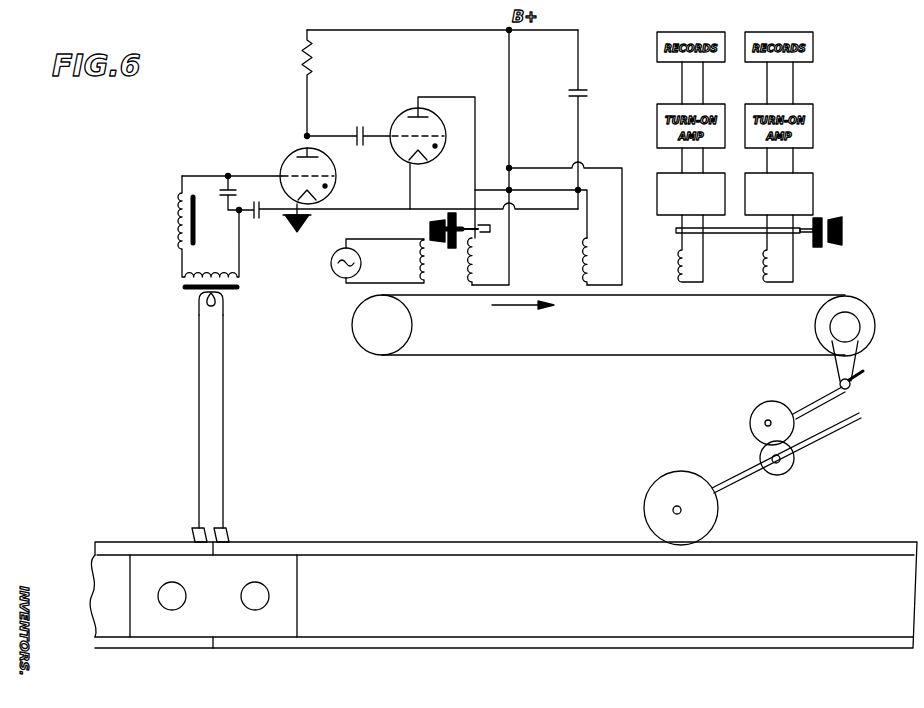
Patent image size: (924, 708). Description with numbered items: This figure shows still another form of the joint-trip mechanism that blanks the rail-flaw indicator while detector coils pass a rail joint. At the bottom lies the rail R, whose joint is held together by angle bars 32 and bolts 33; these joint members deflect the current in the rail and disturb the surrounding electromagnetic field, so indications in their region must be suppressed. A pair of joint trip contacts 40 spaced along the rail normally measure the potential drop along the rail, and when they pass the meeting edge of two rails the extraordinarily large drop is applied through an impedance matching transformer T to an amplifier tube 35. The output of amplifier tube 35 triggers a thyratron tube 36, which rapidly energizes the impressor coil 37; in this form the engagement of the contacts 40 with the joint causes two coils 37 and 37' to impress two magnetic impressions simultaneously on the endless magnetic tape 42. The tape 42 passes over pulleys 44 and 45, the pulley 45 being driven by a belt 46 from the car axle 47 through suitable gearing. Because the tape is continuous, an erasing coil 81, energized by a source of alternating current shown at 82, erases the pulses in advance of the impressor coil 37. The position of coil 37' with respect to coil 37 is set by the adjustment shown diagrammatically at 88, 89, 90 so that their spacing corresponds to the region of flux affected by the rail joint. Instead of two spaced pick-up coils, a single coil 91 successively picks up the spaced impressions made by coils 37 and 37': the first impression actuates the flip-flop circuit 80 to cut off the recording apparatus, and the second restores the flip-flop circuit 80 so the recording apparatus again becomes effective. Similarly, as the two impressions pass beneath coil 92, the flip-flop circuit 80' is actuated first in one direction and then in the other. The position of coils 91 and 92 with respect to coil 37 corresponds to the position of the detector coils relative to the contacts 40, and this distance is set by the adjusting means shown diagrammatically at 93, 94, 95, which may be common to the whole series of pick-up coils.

The amplifier tube 35 is at (290, 156).
The thyratron tube 36 is at (396, 118).
The impedance matching transformer T is at (230, 235).
The joint trip contacts 40 is at (201, 527).
The adjustment 88 is at (428, 223).
The adjustment 89 is at (452, 214).
The adjustment 90 is at (478, 220).
The AC source 82 is at (338, 276).
The erasing coil 81 is at (414, 262).
The second impressor coil 37' is at (452, 265).
The impressor coil 37 is at (562, 263).
The flip-flop circuit 80 is at (677, 186).
The second flip-flop circuit 80' is at (799, 185).
The pick-up coil 91 is at (676, 273).
The pick-up coil 92 is at (761, 273).
The adjusting means 95 is at (740, 238).
The adjusting means 94 is at (818, 220).
The adjusting means 93 is at (838, 246).
The endless magnetic tape 42 is at (668, 297).
The pulley 44 is at (385, 337).
The driven pulley 45 is at (858, 311).
The belt 46 is at (858, 365).
The car axle 47 is at (750, 478).
The record R is at (468, 572).
The angle bars 32 is at (213, 622).
The bolts 33 is at (170, 604).